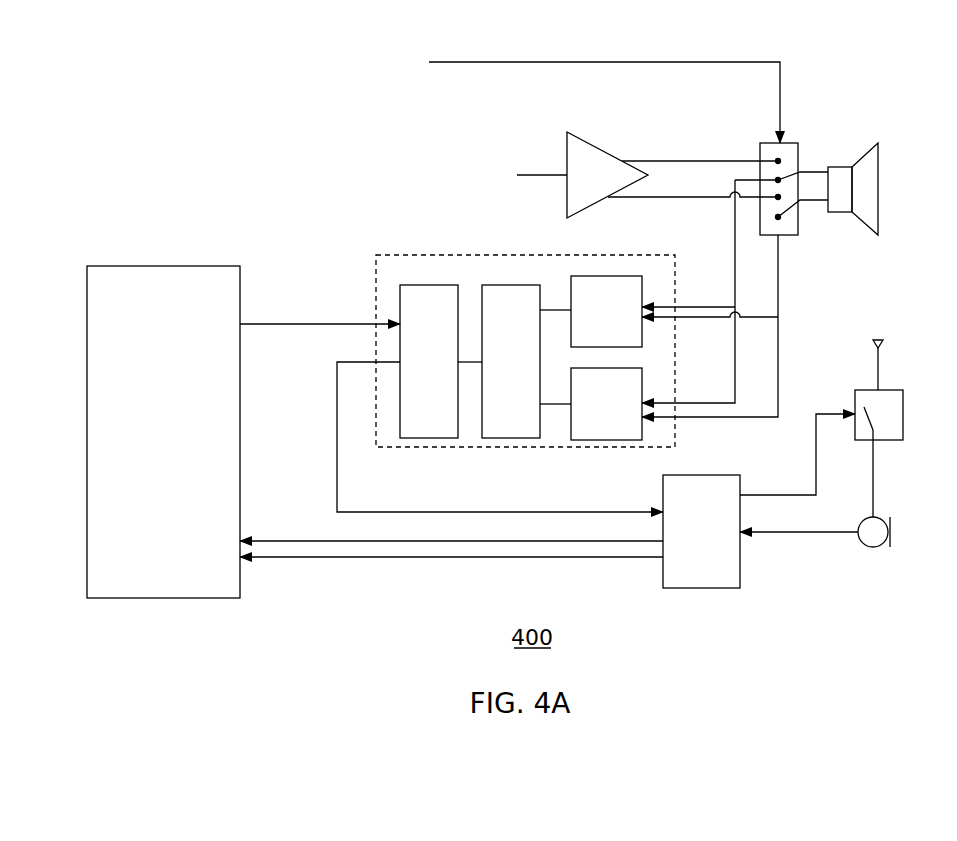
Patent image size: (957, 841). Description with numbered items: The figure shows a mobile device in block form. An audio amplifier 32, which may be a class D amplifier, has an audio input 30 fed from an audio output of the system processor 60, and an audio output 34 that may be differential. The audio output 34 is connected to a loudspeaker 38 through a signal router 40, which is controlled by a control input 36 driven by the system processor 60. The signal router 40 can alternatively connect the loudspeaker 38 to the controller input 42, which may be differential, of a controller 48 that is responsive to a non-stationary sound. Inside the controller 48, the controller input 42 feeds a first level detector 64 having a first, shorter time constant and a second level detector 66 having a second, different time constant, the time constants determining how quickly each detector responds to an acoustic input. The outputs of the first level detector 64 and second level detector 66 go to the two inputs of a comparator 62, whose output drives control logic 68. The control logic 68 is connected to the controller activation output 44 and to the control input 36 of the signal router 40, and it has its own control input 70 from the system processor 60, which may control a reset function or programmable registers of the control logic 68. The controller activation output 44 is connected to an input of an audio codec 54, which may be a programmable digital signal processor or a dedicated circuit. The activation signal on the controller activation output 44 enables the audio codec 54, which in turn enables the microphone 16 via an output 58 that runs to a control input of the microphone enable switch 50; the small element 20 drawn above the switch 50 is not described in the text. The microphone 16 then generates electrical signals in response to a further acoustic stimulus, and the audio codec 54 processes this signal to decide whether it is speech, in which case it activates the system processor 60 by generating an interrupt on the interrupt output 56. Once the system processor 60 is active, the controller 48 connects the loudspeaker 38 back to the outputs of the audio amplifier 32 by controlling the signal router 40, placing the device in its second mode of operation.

The microphone 16 is at (870, 548).
The antenna 20 is at (880, 345).
The audio input 30 is at (532, 175).
The audio amplifier 32 is at (600, 149).
The audio output 34 is at (705, 196).
The control input 36 is at (517, 62).
The loudspeaker 38 is at (858, 152).
The signal router 40 is at (790, 237).
The controller input 42 is at (735, 275).
The controller activation output 44 is at (545, 512).
The controller 48 is at (400, 254).
The RF switch 50 is at (903, 418).
The audio codec 54 is at (740, 572).
The interrupt output 56 is at (480, 558).
The output 58 is at (797, 454).
The system processor 60 is at (170, 266).
The comparator 62 is at (514, 326).
The first level detector 64 is at (617, 276).
The second level detector 66 is at (607, 441).
The control logic 68 is at (400, 300).
The control input 70 is at (310, 324).